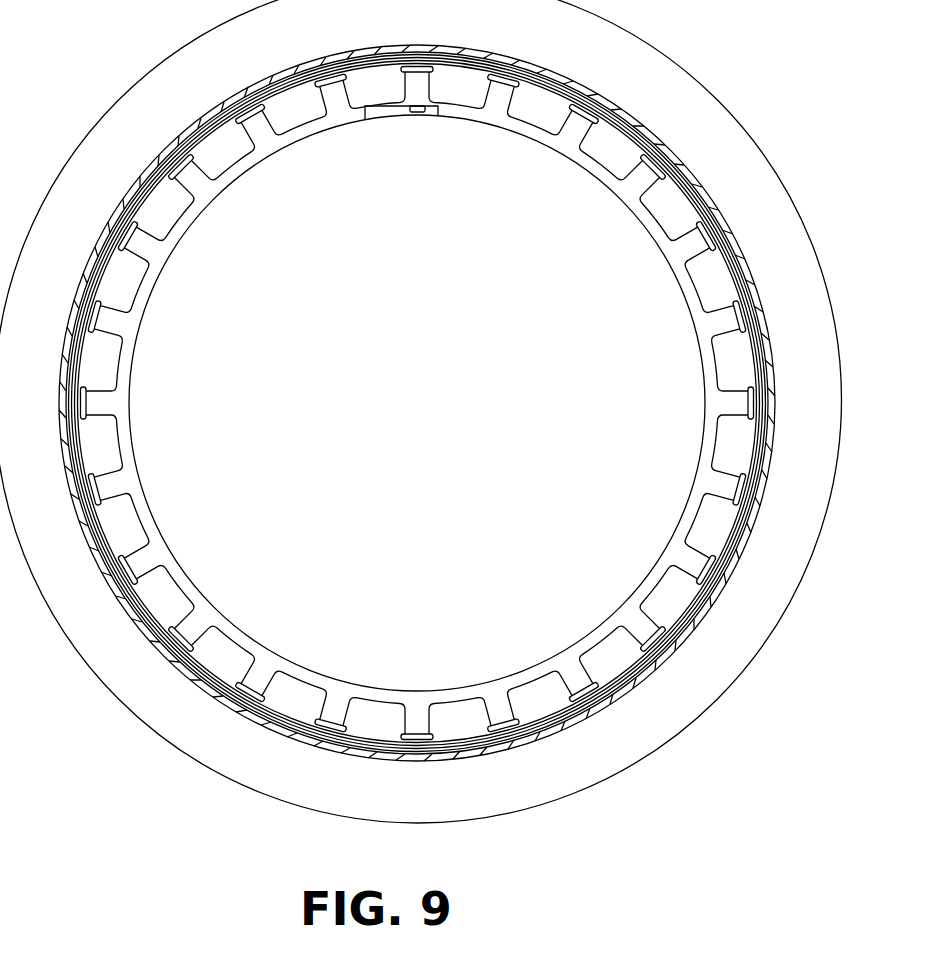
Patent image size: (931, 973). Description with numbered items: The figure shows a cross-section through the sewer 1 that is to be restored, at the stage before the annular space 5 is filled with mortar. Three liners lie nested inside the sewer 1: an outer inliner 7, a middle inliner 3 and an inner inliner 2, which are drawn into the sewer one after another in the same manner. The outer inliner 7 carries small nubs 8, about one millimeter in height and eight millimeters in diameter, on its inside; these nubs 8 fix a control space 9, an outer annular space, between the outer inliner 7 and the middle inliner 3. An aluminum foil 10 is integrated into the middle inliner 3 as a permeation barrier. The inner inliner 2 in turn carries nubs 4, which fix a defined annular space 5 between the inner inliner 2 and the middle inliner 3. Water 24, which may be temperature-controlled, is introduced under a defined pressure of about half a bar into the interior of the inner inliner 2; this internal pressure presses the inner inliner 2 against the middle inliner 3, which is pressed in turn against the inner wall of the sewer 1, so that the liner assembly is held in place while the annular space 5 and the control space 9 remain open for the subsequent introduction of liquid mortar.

The sewer 1 is at (753, 168).
The inner inliner 2 is at (417, 403).
The middle inliner 3 is at (417, 429).
The nubs 4 is at (267, 665).
The annular space 5 is at (394, 616).
The outer inliner 7 is at (156, 314).
The nubs 8 is at (417, 403).
The control space 9 is at (417, 407).
The aluminum foil 10 is at (431, 410).
The water 24 is at (503, 519).